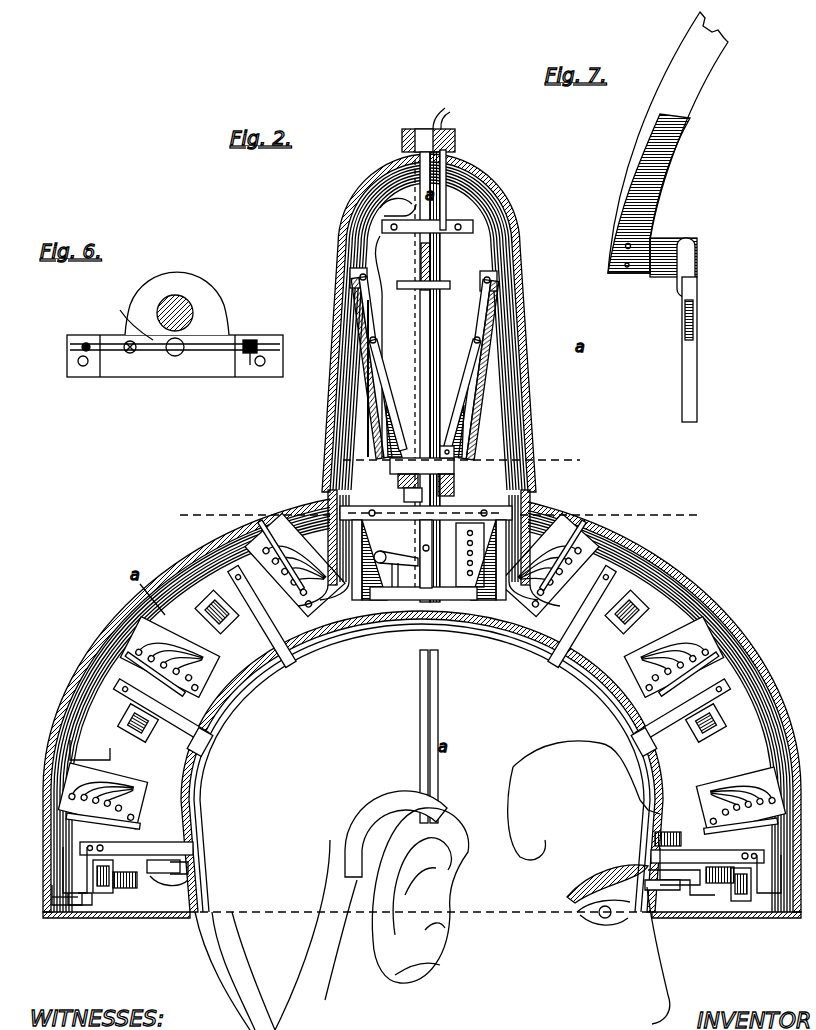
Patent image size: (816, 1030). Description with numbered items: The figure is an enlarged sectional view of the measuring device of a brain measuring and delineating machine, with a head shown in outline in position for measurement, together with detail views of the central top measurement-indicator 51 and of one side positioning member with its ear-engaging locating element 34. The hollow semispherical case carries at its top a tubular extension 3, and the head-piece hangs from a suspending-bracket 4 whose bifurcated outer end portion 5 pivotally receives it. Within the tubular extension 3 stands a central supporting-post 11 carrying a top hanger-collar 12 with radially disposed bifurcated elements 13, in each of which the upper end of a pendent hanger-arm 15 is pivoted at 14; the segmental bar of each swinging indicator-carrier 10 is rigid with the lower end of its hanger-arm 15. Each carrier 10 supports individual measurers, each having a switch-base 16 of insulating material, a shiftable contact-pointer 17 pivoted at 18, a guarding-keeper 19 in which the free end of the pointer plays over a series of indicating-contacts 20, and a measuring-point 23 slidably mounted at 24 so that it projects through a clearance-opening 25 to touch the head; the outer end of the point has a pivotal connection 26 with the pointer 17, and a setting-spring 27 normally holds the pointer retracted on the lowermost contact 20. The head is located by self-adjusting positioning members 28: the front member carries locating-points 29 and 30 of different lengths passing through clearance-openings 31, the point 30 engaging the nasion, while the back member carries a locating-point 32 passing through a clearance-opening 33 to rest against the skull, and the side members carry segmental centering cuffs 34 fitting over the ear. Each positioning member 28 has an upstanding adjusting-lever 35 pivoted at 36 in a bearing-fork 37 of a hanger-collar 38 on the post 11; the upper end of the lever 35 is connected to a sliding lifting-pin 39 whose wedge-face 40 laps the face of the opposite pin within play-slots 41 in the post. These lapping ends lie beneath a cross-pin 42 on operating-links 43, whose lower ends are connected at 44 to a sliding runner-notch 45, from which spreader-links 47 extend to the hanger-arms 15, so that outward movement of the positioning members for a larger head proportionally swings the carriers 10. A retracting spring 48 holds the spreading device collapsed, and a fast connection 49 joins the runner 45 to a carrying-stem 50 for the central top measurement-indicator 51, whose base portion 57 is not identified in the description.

In FIG. 2, the tubular extension 3 is at (382, 226).
In FIG. 2, the suspending-bracket 4 is at (272, 460).
In FIG. 2, the bifurcated outer end portion 5 is at (437, 513).
In FIG. 2, the indicator-carrier 10 is at (62, 712).
In FIG. 2, the central supporting-post 11 is at (442, 366).
In FIG. 2, the top hanger-collar 12 is at (460, 218).
In FIG. 2, the bifurcated element 13 is at (380, 210).
In FIG. 2, the pivotal mounting 14 is at (380, 165).
In FIG. 2, the pendent hanger-arm 15 is at (478, 430).
In FIG. 2, the switch-base 16 is at (380, 420).
In FIG. 2, the shiftable contact-pointer 17 is at (232, 585).
In FIG. 6, the shiftable contact-pointer 17 is at (122, 312).
In FIG. 2, the pivotal support 18 is at (78, 908).
In FIG. 6, the pivotal support 18 is at (86, 343).
In FIG. 2, the guarding-keeper 19 is at (90, 800).
In FIG. 6, the guarding-keeper 19 is at (250, 365).
In FIG. 2, the indicating-contact 20 is at (70, 790).
In FIG. 6, the indicating-contact 20 is at (250, 340).
In FIG. 2, the measuring-point 23 is at (260, 608).
In FIG. 2, the slidable mounting 24 is at (140, 928).
In FIG. 2, the clearance-opening 25 is at (182, 866).
In FIG. 2, the pivotal connection 26 is at (52, 890).
In FIG. 2, the setting-spring 27 is at (112, 895).
In FIG. 6, the setting-spring 27 is at (130, 353).
In FIG. 2, the self-adjusting positioning member 28 is at (236, 680).
In FIG. 7, the self-adjusting positioning member 28 is at (688, 114).
In FIG. 2, the locating-point 29 is at (655, 838).
In FIG. 2, the locating-point 30 is at (690, 905).
In FIG. 2, the clearance-opening 31 is at (670, 900).
In FIG. 2, the locating-point 32 is at (176, 895).
In FIG. 2, the clearance-opening 33 is at (190, 888).
In FIG. 2, the locating element 34 is at (378, 812).
In FIG. 7, the locating element 34 is at (697, 333).
In FIG. 2, the adjusting-lever 35 is at (370, 296).
In FIG. 2, the pivotal mounting 36 is at (512, 505).
In FIG. 2, the bearing-fork 37 is at (640, 805).
In FIG. 2, the hanger-collar 38 is at (404, 492).
In FIG. 2, the sliding lifting-pin 39 is at (497, 278).
In FIG. 2, the wedge-face 40 is at (350, 275).
In FIG. 2, the play-slot 41 is at (446, 190).
In FIG. 2, the cross-pin 42 is at (430, 255).
In FIG. 2, the operating-link 43 is at (368, 330).
In FIG. 2, the connection 44 is at (454, 454).
In FIG. 2, the sliding runner-notch 45 is at (392, 466).
In FIG. 2, the spreader-link 47 is at (378, 370).
In FIG. 2, the retracting spring 48 is at (454, 484).
In FIG. 2, the fixed pin 49 is at (398, 478).
In FIG. 2, the carrying-stem 50 is at (450, 600).
In FIG. 6, the carrying-stem 50 is at (182, 295).
In FIG. 2, the central top measurement-indicator 51 is at (400, 600).
In FIG. 6, the base plate 57 is at (180, 365).